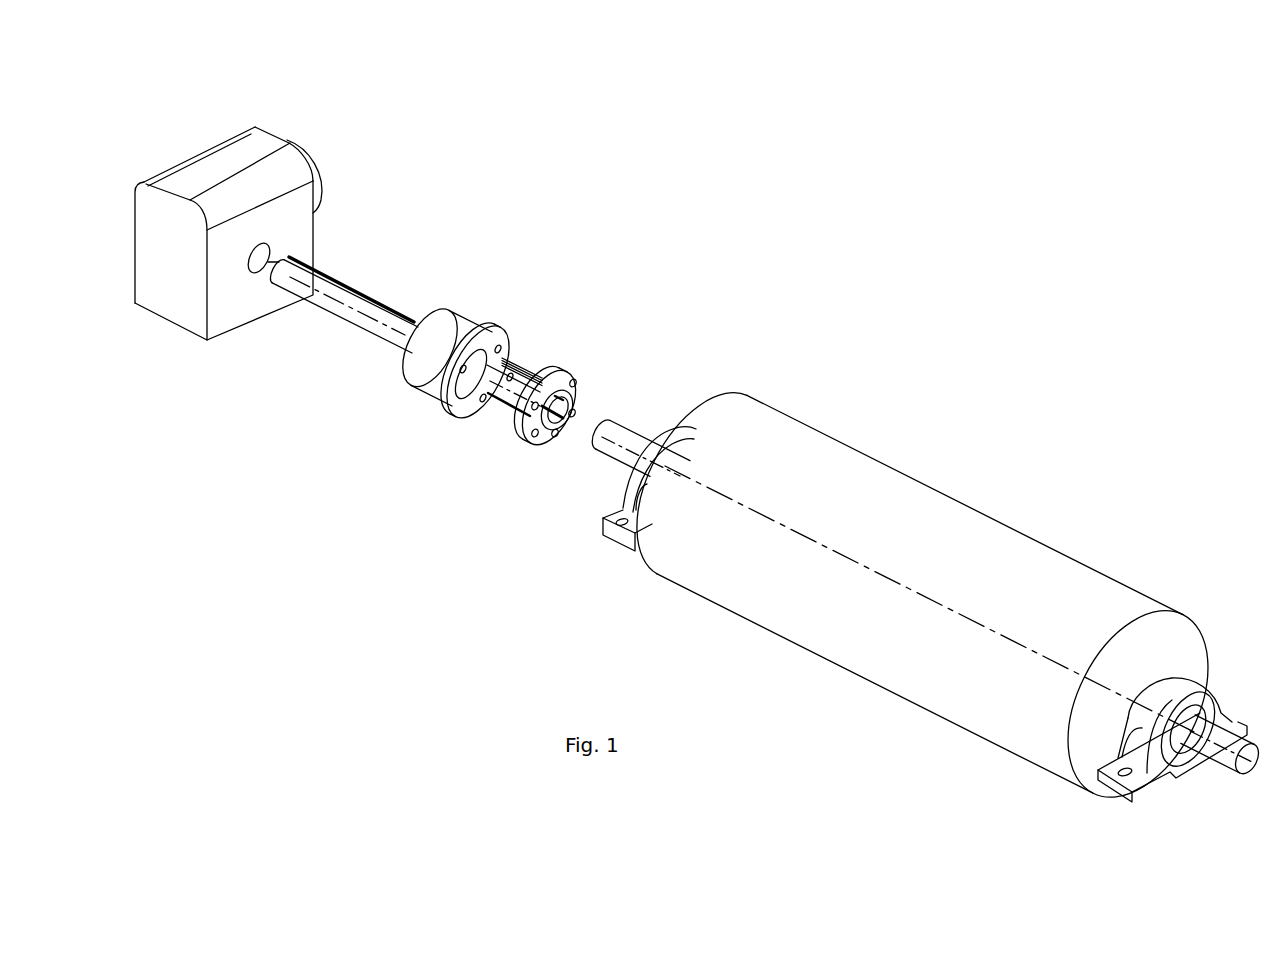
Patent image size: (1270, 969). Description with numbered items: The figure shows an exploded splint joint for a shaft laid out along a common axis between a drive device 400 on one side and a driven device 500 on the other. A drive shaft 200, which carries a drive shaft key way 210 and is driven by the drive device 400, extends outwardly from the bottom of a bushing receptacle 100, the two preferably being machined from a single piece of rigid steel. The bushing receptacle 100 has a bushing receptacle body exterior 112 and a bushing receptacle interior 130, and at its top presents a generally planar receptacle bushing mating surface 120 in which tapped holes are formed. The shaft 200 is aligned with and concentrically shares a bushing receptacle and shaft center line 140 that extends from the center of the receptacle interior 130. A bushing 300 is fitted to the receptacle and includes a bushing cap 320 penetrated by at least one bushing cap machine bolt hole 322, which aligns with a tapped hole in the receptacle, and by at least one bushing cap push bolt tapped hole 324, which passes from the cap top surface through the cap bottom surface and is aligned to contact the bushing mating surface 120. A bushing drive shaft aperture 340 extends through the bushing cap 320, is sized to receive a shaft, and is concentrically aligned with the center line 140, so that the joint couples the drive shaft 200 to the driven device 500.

The bushing receptacle 100 is at (413, 362).
The bushing receptacle body exterior 112 is at (421, 367).
The receptacle bushing mating surface 120 is at (474, 380).
The bushing receptacle interior 130 is at (465, 405).
The bushing receptacle and shaft center line 140 is at (617, 442).
The drive shaft 200 is at (382, 245).
The drive shaft key way 210 is at (370, 292).
The bushing 300 is at (527, 463).
The bushing cap 320 is at (469, 400).
The bushing cap machine bolt hole 322 is at (500, 348).
The bushing cap push bolt tapped hole 324 is at (567, 416).
The bushing drive shaft aperture 340 is at (553, 404).
The drive device 400 is at (291, 113).
The driven device 500 is at (876, 506).